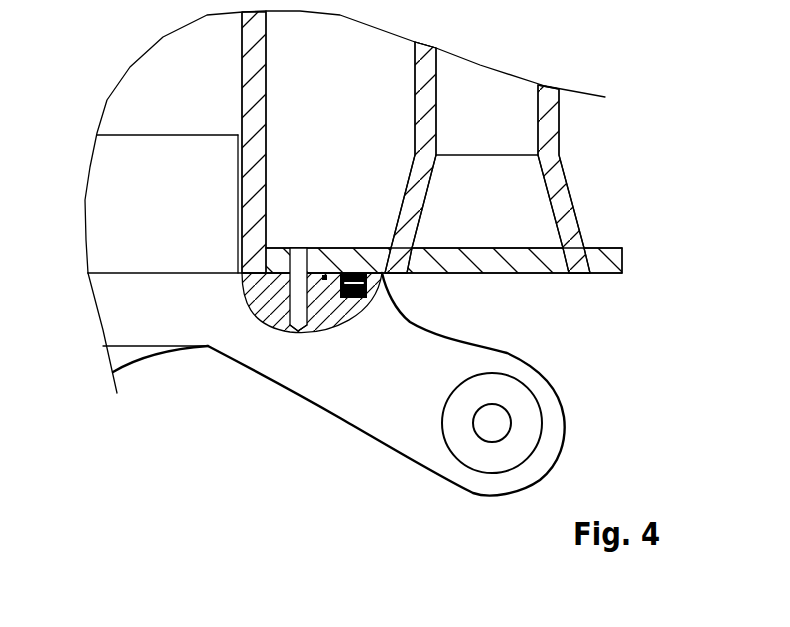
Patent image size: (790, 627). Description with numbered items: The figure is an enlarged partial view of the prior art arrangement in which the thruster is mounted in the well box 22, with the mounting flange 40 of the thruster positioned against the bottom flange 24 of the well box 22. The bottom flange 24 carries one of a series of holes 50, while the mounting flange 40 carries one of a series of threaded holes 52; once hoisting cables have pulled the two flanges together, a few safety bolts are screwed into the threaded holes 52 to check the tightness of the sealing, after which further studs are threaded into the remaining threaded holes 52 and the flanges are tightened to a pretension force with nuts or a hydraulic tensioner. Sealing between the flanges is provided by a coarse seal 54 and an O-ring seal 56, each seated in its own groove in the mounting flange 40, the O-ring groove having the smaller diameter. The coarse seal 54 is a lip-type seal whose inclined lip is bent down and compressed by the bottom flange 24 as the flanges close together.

The well box 22 is at (210, 87).
The bottom flange 24 is at (602, 248).
The mounting flange 40 is at (155, 326).
The hole 50 is at (297, 335).
The threaded hole 52 is at (270, 325).
The coarse seal 54 is at (388, 287).
The O-ring seal 56 is at (314, 330).